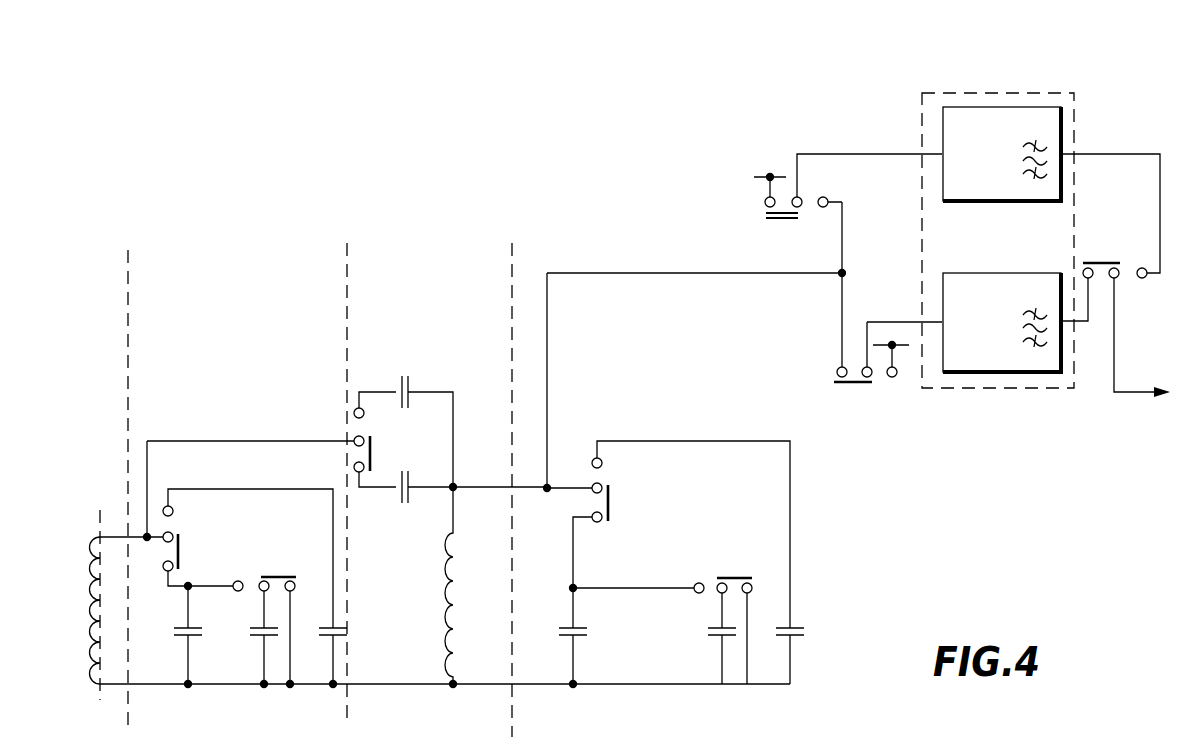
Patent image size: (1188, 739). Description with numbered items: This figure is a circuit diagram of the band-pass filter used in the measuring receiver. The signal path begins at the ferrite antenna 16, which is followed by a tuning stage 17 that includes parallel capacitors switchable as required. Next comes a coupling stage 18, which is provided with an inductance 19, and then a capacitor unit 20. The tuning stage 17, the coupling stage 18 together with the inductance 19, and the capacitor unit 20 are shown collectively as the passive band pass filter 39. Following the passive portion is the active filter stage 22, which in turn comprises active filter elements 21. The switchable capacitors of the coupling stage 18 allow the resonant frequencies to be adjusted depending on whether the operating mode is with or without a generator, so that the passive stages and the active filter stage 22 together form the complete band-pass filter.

The ferrite antenna 16 is at (81, 346).
The tuning stage 17 is at (222, 345).
The coupling stage 18 is at (548, 502).
The inductance 19 is at (460, 612).
The capacitor unit 20 is at (658, 345).
The active filter elements 21 is at (1049, 297).
The active filter stage 22 is at (922, 120).
The passive band pass filter 39 is at (687, 235).